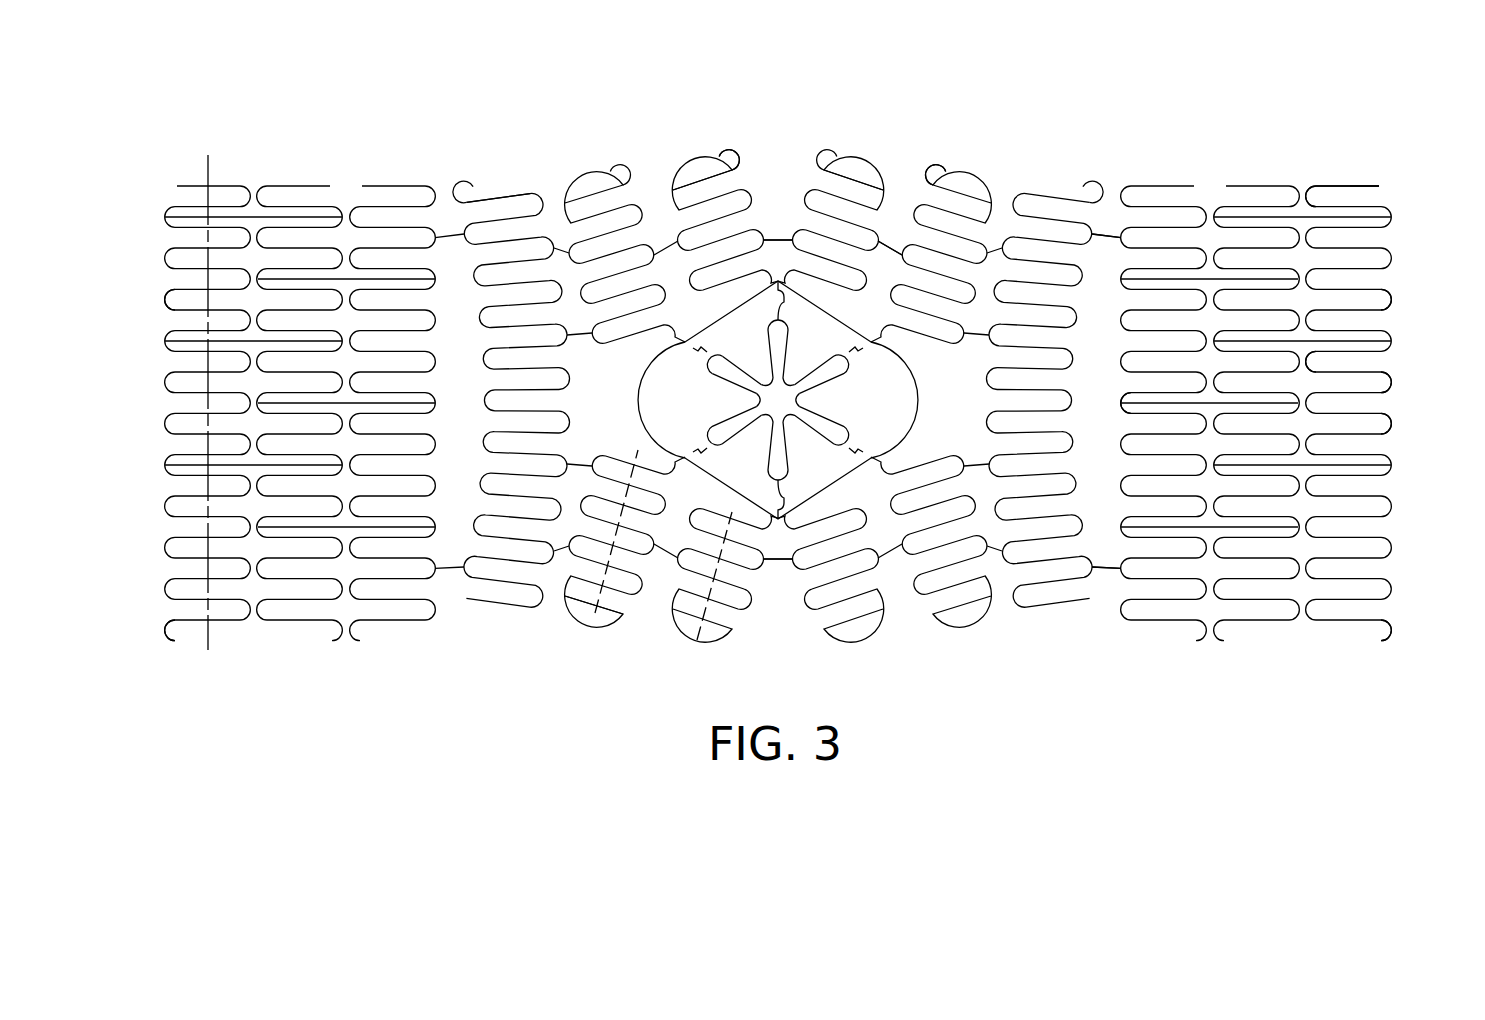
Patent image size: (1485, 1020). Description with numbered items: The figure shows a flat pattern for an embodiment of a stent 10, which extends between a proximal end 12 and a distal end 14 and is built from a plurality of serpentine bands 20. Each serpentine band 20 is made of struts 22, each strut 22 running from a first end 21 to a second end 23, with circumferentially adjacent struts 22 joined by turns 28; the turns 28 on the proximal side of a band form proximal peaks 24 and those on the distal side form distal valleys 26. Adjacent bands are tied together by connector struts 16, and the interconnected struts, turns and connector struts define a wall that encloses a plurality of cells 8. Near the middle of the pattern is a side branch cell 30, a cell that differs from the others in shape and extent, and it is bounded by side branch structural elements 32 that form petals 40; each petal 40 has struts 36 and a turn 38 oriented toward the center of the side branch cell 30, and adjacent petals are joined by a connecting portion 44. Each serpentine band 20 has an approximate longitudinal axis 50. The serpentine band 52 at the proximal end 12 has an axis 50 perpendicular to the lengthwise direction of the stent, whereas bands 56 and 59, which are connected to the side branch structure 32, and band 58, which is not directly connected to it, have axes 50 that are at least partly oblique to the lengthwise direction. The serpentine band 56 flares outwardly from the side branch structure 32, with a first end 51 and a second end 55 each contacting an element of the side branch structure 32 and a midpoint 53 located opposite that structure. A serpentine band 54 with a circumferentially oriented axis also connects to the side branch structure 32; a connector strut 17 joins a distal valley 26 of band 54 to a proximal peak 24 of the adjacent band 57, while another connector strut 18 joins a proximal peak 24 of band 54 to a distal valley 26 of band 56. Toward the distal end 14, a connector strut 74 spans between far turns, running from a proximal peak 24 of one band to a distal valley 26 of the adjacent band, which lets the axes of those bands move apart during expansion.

The cell 8 is at (1080, 406).
The stent 10 is at (781, 346).
The proximal end 12 is at (165, 294).
The distal end 14 is at (1392, 298).
The connector strut 16 is at (1108, 237).
The connector strut 17 is at (890, 248).
The connector strut 18 is at (787, 242).
The serpentine band 20 is at (1342, 622).
The first end 21 is at (1305, 190).
The strut 22 is at (1338, 186).
The second end 23 is at (1372, 186).
The proximal peak 24 is at (1312, 360).
The distal valley 26 is at (1392, 382).
The turn 28 is at (1392, 418).
The side branch cell 30 is at (792, 401).
The side branch structural elements 32 is at (832, 378).
The strut 36 is at (716, 386).
The turn 38 is at (748, 401).
The side branch petal 40 is at (766, 432).
The connecting portion 44 is at (720, 352).
The longitudinal axis 50 is at (210, 160).
The first end 51 is at (768, 556).
The serpentine band 52 is at (194, 622).
The midpoint 53 is at (733, 160).
The serpentine band 54 is at (850, 178).
The second end 55 is at (778, 280).
The serpentine band 56 is at (700, 188).
The serpentine band 57 is at (956, 190).
The serpentine band 58 is at (506, 197).
The serpentine band 59 is at (638, 600).
The connector strut 74 is at (1244, 522).